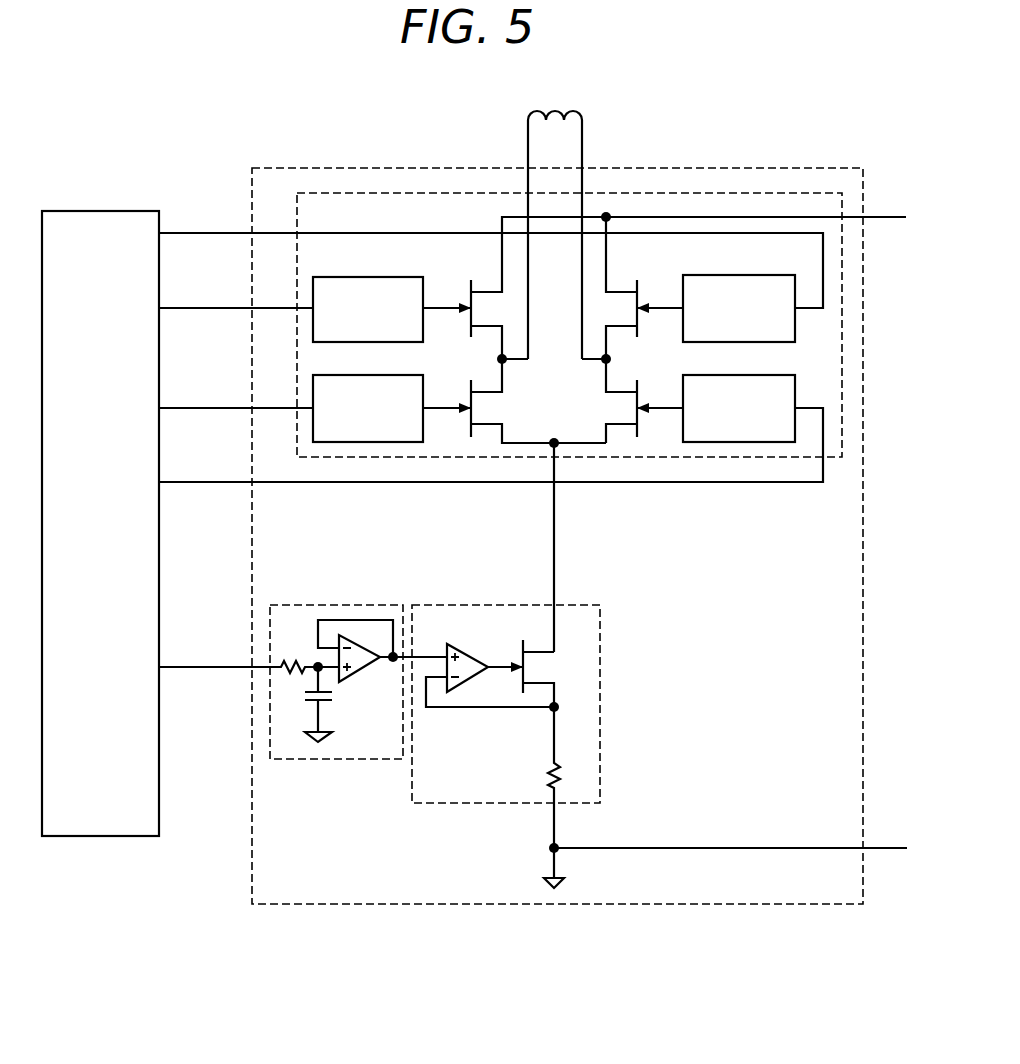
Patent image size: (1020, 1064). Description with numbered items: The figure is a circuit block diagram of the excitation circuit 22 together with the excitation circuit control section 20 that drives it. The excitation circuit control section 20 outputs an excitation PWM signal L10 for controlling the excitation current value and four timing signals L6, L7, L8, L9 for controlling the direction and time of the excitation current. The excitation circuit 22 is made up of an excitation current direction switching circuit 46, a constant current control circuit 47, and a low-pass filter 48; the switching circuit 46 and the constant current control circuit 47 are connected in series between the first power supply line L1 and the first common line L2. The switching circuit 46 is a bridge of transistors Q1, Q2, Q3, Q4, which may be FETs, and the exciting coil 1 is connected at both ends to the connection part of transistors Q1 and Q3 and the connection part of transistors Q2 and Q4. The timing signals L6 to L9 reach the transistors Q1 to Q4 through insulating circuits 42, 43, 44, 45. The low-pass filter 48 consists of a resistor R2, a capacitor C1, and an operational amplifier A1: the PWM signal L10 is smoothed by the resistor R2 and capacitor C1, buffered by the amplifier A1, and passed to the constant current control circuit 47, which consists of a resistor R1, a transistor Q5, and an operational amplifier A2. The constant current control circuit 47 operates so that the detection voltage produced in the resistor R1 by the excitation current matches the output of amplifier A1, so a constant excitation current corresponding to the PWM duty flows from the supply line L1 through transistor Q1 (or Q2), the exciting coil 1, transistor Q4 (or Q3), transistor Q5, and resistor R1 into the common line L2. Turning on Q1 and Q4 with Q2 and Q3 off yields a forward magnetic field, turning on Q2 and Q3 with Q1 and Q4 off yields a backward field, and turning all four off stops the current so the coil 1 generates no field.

The exciting coil 1 is at (526, 118).
The excitation circuit control section 20 is at (102, 210).
The excitation circuit 22 is at (366, 167).
The insulating circuit 42 is at (362, 276).
The insulating circuit 43 is at (759, 274).
The insulating circuit 44 is at (362, 374).
The insulating circuit 45 is at (759, 374).
The excitation current direction switching circuit 46 is at (688, 458).
The constant current control circuit 47 is at (513, 604).
The low-pass filter 48 is at (341, 604).
The first power supply line L1 is at (888, 216).
The first common line L2 is at (888, 847).
The timing signal L6 is at (207, 232).
The timing signal L7 is at (207, 307).
The timing signal L8 is at (207, 407).
The timing signal L9 is at (207, 481).
The excitation PWM signal L10 is at (207, 666).
The transistor Q1 is at (463, 299).
The transistor Q2 is at (650, 299).
The transistor Q3 is at (463, 399).
The transistor Q4 is at (650, 399).
The transistor Q5 is at (533, 667).
The operational amplifier A1 is at (362, 673).
The operational amplifier A2 is at (464, 652).
The resistor R1 is at (549, 777).
The resistor R2 is at (290, 661).
The capacitor C1 is at (303, 702).